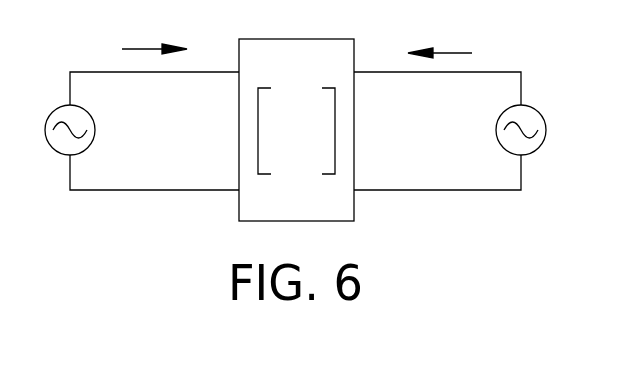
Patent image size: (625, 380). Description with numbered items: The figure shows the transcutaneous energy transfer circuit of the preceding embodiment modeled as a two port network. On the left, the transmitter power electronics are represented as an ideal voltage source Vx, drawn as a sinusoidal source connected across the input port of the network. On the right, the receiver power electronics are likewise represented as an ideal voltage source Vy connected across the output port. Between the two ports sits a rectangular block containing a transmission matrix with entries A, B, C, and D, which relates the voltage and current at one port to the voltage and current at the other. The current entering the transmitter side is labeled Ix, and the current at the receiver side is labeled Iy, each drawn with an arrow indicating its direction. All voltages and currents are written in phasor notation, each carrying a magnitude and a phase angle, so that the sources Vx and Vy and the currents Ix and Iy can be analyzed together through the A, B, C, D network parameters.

The transmission matrix element A is at (276, 106).
The transmission matrix element B is at (321, 106).
The transmission matrix element C is at (276, 157).
The transmission matrix element D is at (321, 157).
The transmitter voltage source Vx is at (122, 130).
The receiver voltage source Vy is at (471, 130).
The transmitter port current Ix is at (156, 34).
The receiver port current Iy is at (441, 38).